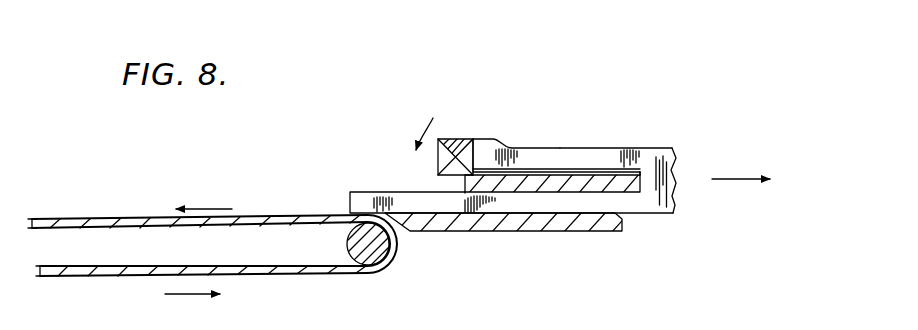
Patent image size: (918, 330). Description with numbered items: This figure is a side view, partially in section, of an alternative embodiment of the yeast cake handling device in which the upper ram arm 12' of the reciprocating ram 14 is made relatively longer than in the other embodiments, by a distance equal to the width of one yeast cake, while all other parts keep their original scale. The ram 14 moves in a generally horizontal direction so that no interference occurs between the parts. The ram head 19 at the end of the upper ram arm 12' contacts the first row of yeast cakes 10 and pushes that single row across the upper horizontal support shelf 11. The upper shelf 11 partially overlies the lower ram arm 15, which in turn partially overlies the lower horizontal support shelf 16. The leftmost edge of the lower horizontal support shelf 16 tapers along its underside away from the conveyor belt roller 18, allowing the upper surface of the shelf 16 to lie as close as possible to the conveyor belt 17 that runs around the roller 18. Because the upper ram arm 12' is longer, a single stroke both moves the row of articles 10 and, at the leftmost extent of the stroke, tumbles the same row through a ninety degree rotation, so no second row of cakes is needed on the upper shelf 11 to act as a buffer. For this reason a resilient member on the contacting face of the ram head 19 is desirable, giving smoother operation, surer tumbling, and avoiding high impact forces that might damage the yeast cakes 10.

The yeast cakes 10 is at (453, 138).
The upper horizontal support shelf 11 is at (628, 180).
The upper ram arm 12' is at (616, 149).
The reciprocating ram 14 is at (680, 185).
The lower ram arm 15 is at (366, 203).
The lower horizontal support shelf 16 is at (601, 233).
The conveyor belt 17 is at (103, 218).
The conveyor belt roller 18 is at (370, 250).
The ram head 19 is at (481, 146).